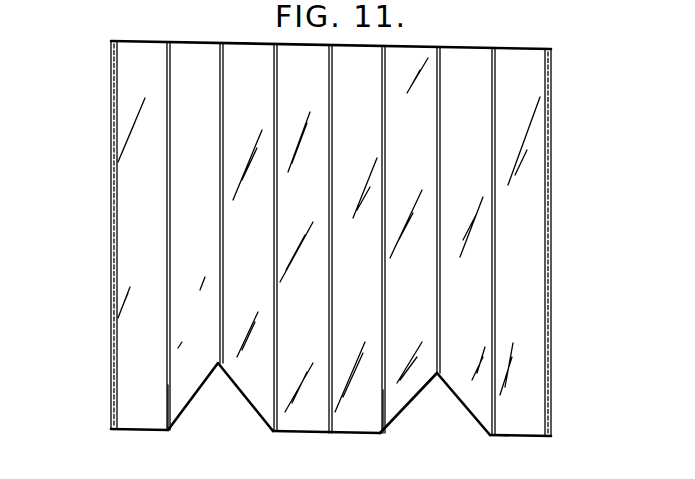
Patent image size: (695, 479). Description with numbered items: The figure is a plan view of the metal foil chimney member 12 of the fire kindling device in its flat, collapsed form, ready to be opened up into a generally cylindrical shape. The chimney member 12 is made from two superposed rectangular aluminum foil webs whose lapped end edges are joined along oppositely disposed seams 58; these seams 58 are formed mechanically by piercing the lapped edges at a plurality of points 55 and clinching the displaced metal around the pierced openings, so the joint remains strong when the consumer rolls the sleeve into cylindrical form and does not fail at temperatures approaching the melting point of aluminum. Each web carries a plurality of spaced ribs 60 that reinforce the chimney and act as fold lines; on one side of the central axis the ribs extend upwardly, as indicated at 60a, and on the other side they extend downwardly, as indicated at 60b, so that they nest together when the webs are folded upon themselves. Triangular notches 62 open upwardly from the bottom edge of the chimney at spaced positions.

The chimney member 12 is at (104, 168).
The piercing points 55 is at (110, 210).
The seams 58 is at (111, 110).
The ribs 60 is at (219, 262).
The upwardly extending ribs 60a is at (165, 390).
The downwardly extending ribs 60b is at (380, 393).
The triangular notches 62 is at (243, 401).